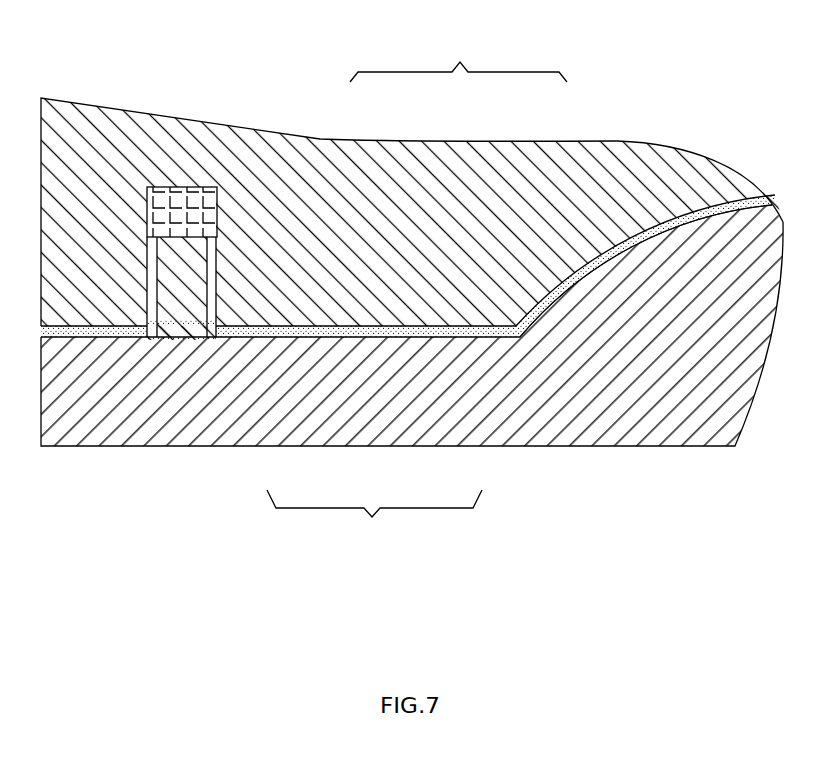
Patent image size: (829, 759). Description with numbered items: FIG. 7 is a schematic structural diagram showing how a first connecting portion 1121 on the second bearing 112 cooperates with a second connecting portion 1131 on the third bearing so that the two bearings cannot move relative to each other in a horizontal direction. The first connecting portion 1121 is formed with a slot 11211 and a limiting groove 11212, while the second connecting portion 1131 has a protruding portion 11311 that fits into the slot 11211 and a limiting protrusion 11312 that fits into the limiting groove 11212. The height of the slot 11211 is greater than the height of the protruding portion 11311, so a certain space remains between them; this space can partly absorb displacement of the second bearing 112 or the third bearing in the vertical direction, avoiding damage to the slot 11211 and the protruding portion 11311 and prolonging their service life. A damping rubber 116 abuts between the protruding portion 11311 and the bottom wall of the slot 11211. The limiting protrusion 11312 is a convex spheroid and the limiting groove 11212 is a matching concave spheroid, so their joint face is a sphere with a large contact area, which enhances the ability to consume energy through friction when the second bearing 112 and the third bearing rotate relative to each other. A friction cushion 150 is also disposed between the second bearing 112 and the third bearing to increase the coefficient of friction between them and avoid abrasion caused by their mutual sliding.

The second bearing 112 is at (97, 128).
The damping rubber 116 is at (173, 203).
The first connecting portion 1121 is at (458, 57).
The slot 11211 is at (212, 250).
The limiting groove 11212 is at (660, 152).
The friction cushion 150 is at (87, 335).
The second connecting portion 1131 is at (415, 370).
The protruding portion 11311 is at (185, 290).
The limiting protrusion 11312 is at (732, 245).